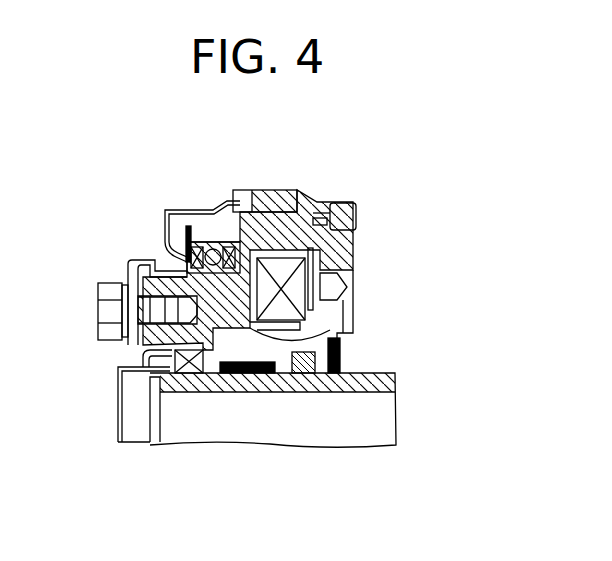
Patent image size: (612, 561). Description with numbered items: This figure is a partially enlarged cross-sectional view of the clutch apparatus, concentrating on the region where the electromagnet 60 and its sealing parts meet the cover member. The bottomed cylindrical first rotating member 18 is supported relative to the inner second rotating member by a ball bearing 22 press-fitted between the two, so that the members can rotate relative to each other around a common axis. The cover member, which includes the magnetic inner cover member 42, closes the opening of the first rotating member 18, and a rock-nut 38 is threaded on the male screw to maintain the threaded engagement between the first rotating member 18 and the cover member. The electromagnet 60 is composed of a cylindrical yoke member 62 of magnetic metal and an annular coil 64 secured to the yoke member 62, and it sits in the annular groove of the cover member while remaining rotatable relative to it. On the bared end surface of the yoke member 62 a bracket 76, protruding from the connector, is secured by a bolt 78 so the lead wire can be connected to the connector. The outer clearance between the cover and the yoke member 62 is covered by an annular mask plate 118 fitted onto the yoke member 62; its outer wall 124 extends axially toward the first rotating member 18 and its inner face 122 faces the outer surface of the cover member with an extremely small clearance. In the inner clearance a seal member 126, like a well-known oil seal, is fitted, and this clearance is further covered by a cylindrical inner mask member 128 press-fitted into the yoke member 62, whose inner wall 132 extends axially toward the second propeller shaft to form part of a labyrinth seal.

The first rotating member 18 is at (283, 195).
The ball bearing 22 is at (368, 380).
The rock-nut 38 is at (246, 191).
The inner cover member 42 is at (368, 243).
The electromagnet 60 is at (340, 331).
The yoke member 62 is at (308, 211).
The annular coil 64 is at (300, 290).
The bracket 76 is at (125, 273).
The bolt 78 is at (96, 311).
The annular mask plate 118 is at (147, 202).
The inner face 122 is at (165, 240).
The outer wall 124 is at (186, 210).
The seal member 126 is at (188, 375).
The inner mask member 128 is at (138, 448).
The inner wall 132 is at (122, 375).